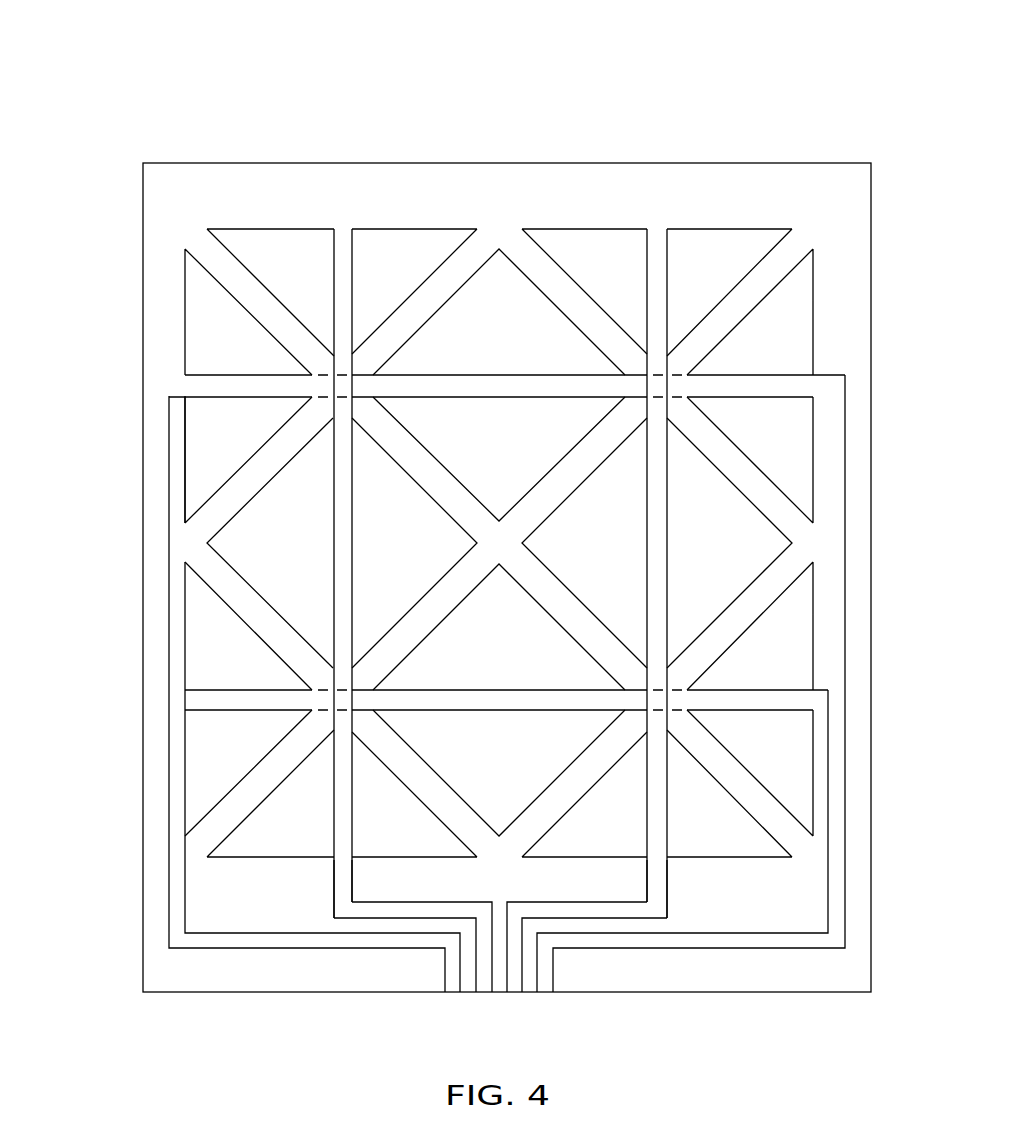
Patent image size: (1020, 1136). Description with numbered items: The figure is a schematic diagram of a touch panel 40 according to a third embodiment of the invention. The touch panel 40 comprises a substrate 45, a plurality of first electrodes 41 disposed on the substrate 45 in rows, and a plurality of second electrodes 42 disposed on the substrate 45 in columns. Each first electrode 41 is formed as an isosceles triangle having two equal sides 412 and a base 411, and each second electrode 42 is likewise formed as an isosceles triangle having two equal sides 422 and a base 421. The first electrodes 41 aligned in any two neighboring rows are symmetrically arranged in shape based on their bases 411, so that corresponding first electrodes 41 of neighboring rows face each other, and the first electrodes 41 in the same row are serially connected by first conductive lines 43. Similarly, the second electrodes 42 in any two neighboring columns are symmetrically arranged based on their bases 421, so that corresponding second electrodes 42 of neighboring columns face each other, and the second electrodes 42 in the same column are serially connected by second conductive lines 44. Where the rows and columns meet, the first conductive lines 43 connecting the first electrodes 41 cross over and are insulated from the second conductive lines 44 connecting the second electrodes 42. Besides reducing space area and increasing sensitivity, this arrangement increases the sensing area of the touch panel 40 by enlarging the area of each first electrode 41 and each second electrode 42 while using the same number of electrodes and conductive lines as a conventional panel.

The touch panel 40 is at (523, 30).
The first electrode 41 is at (572, 103).
The base 411 is at (527, 375).
The equal sides 412 is at (513, 268).
The second electrode 42 is at (80, 477).
The base 421 is at (333, 522).
The equal sides 422 is at (213, 558).
The first conductive line 43 is at (757, 1033).
The second conductive line 44 is at (333, 407).
The substrate 45 is at (805, 183).